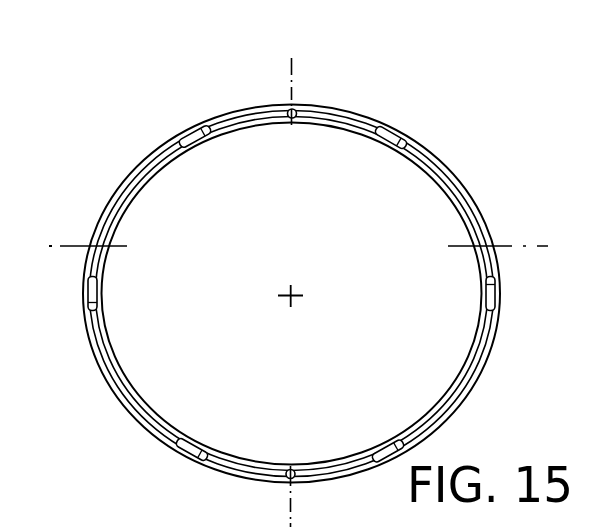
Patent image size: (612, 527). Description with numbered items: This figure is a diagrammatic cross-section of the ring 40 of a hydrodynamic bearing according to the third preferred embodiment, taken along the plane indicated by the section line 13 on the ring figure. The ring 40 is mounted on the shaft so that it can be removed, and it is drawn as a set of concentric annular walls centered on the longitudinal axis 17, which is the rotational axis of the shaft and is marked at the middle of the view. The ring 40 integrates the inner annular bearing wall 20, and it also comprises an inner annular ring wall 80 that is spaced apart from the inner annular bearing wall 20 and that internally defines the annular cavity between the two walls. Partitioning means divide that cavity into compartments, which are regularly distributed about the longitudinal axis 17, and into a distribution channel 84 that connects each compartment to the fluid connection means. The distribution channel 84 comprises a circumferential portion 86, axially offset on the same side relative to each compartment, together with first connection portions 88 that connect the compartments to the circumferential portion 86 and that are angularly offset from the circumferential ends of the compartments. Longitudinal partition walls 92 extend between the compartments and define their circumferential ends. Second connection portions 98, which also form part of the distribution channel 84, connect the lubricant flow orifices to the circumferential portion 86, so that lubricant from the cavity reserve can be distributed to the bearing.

The section line 13- 13 is at (42, 208).
The longitudinal axis 17 is at (288, 293).
The inner annular bearing wall 20 is at (206, 122).
The ring 40 is at (493, 191).
The inner annular ring wall 80 is at (209, 136).
The distribution channel 84 is at (302, 34).
The circumferential portion 86 is at (420, 143).
The first connection portions 88 is at (393, 130).
The longitudinal partition walls 92 is at (80, 519).
The second connection portions 98 is at (297, 108).